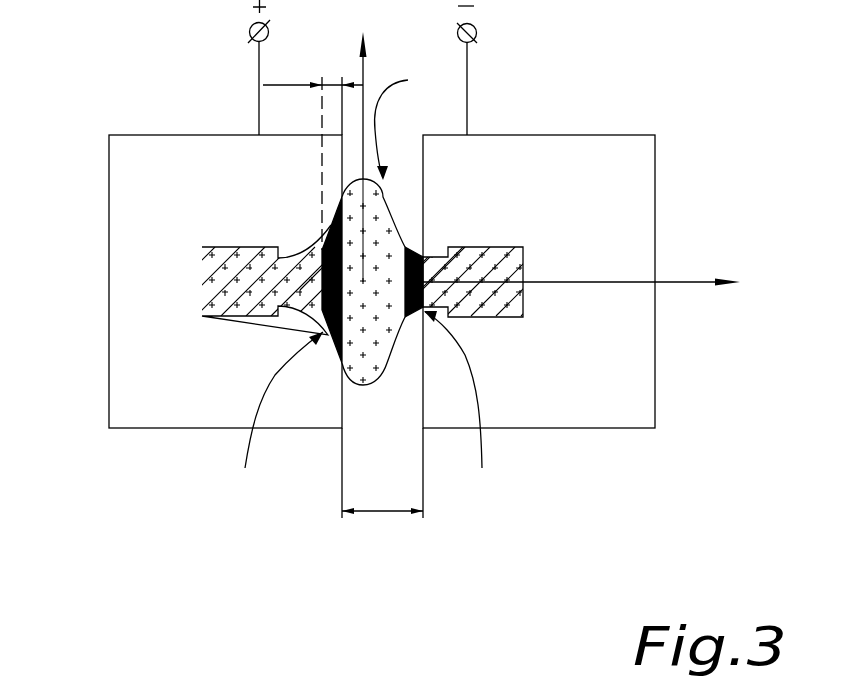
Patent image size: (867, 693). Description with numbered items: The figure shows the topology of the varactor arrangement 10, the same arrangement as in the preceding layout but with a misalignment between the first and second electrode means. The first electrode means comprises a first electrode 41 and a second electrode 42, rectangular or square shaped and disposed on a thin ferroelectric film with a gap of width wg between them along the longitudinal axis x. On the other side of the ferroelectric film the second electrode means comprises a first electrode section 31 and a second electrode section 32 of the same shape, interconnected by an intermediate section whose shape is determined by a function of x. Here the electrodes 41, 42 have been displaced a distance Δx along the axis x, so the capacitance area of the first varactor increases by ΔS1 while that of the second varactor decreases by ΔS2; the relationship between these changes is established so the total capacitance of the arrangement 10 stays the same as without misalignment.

The first electrode 41 is at (145, 143).
The second electrode 42 is at (578, 152).
The first electrode section 31 is at (223, 268).
The second electrode section 32 is at (515, 247).
The varactor arrangement 10 is at (295, 493).